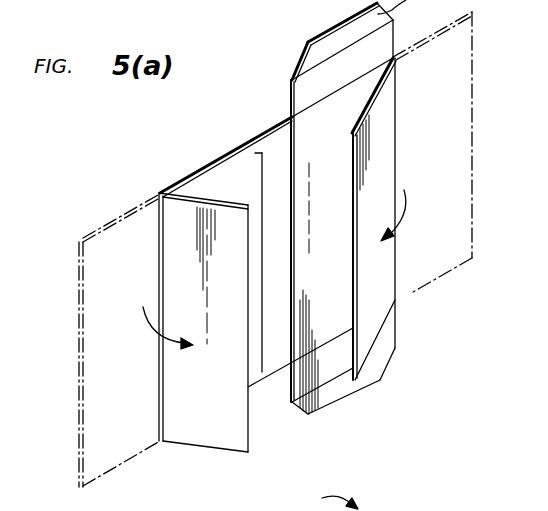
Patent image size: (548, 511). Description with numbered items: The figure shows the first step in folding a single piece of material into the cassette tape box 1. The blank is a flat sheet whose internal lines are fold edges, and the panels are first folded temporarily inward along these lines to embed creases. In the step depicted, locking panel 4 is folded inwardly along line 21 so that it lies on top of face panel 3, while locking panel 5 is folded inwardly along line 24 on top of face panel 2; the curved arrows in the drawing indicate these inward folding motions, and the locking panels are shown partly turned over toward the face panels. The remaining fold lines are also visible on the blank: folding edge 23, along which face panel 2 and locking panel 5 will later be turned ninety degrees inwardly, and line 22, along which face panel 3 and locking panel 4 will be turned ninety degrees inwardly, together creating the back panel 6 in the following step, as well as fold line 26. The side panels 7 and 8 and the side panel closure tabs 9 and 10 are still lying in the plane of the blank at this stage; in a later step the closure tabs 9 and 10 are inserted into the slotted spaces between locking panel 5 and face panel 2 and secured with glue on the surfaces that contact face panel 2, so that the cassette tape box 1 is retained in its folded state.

The cassette tape box 1 is at (509, 156).
The face panel 2 is at (218, 177).
The face panel 3 is at (337, 302).
The locking panel 4 is at (459, 227).
The locking panel 5 is at (192, 428).
The back panel 6 is at (274, 372).
The side panel 7 is at (313, 385).
The side panel 8 is at (293, 95).
The side panel closure tab 9 is at (342, 390).
The side panel closure tab 10 is at (313, 55).
The fold line 21 is at (396, 275).
The fold line 22 is at (293, 140).
The folding edge 23 is at (255, 153).
The fold line 24 is at (158, 222).
The fold line 26 is at (370, 68).